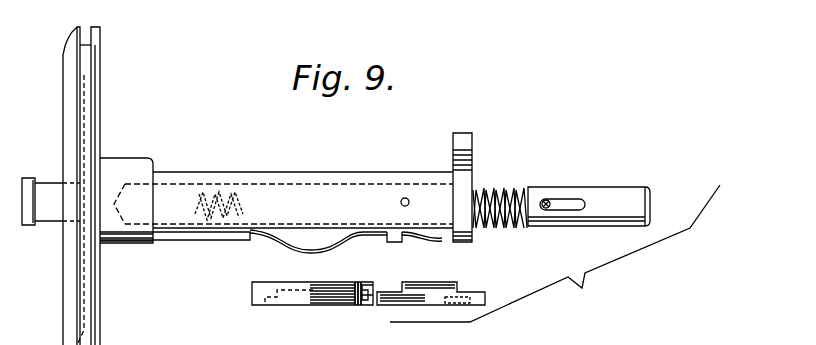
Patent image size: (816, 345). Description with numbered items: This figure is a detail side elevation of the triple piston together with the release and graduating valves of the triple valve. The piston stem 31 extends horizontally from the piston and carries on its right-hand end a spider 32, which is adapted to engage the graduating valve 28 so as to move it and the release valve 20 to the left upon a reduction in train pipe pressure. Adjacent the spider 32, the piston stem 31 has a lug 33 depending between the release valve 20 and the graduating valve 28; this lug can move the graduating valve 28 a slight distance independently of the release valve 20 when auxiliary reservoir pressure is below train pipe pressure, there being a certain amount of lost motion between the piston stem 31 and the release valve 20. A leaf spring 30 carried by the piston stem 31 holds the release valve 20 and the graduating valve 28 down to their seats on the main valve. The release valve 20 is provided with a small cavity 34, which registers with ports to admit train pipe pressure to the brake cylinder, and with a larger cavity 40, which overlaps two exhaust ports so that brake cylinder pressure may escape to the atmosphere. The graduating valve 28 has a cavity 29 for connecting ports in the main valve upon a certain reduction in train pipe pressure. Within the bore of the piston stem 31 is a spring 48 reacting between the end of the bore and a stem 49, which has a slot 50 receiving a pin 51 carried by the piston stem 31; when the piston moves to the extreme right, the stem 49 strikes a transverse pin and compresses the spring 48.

The release valve 20 is at (359, 301).
The graduating valve 28 is at (449, 293).
The cavity 29 is at (455, 305).
The leaf spring 30 is at (331, 246).
The piston stem 31 is at (326, 181).
The spider 32 is at (472, 148).
The lug 33 is at (394, 243).
The small cavity 34 is at (334, 299).
The cavity 40 is at (293, 298).
The spring 48 is at (490, 193).
The stem 49 is at (622, 195).
The slot 50 is at (577, 205).
The pin 51 is at (549, 200).